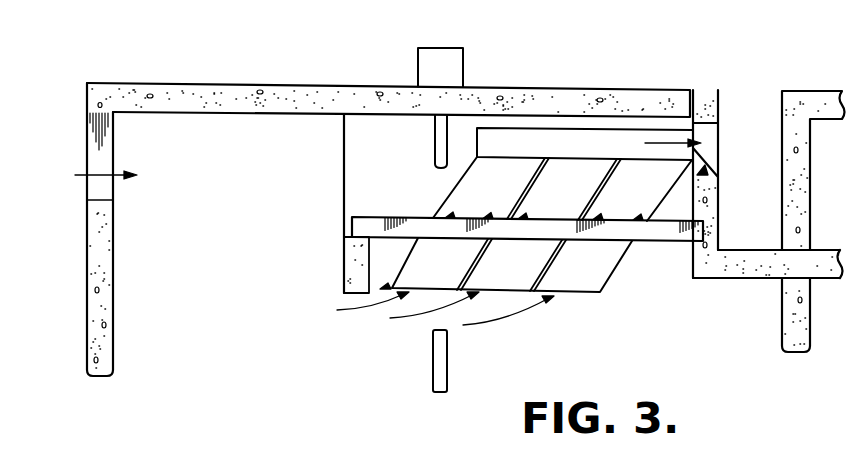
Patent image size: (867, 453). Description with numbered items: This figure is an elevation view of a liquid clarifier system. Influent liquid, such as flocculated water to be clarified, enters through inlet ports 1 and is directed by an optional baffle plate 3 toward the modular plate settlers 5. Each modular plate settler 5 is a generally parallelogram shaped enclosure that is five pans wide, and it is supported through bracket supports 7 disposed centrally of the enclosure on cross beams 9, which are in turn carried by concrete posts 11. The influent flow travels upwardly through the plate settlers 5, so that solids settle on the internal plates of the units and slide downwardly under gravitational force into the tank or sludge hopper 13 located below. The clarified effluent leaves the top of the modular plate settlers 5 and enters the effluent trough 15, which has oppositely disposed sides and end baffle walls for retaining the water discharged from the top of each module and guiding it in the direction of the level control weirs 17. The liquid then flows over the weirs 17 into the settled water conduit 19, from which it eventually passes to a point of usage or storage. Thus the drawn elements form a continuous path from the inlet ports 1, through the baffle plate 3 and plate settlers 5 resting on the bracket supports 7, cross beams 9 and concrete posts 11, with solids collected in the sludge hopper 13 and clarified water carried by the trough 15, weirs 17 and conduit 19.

The inlet port 1 is at (97, 165).
The baffle plate 3 is at (344, 175).
The modular plate settler 5 is at (442, 272).
The bracket support 7 is at (474, 214).
The cross beam 9 is at (670, 235).
The concrete post 11 is at (347, 278).
The sludge hopper 13 is at (510, 370).
The effluent trough 15 is at (525, 142).
The level control weir 17 is at (705, 143).
The settled water conduit 19 is at (772, 233).